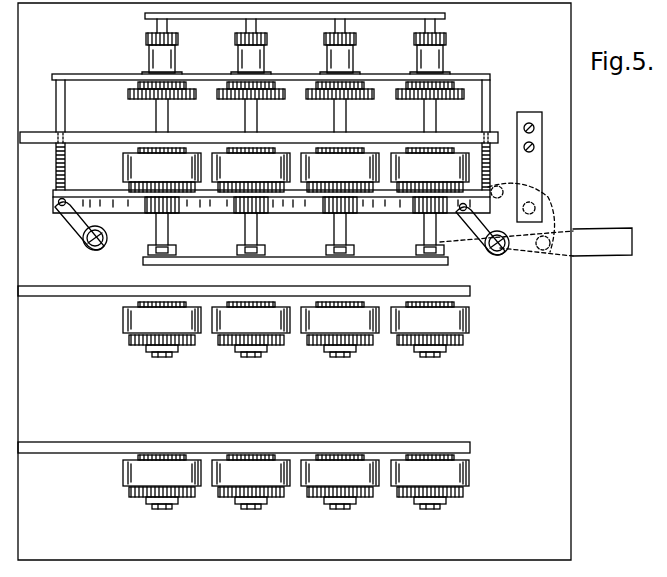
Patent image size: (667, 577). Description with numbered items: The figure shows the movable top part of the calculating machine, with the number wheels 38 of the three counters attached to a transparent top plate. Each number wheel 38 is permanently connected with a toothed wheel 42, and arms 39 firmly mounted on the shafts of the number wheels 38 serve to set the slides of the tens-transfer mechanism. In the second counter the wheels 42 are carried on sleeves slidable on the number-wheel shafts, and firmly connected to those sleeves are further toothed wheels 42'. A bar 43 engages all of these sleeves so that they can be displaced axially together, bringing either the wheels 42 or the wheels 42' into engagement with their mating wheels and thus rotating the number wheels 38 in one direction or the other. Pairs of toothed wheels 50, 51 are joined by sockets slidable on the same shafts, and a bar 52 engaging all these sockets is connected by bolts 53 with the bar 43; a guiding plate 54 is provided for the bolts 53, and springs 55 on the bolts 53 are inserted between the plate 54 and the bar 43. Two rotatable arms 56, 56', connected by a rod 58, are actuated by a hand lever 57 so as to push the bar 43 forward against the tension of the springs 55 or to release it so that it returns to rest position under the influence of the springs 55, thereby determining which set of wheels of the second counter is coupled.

The number wheels 38 is at (137, 157).
The arms 39 is at (232, 250).
The toothed wheels 42 is at (275, 350).
The toothed wheels 42' is at (296, 221).
The bar 43 is at (207, 198).
The toothed wheels 50 is at (128, 94).
The toothed wheels 51 is at (148, 39).
The bar 52 is at (78, 75).
The bolts 53 is at (58, 114).
The guiding plate 54 is at (202, 141).
The springs 55 is at (57, 155).
The rotatable arm 56 is at (80, 230).
The rotatable arm 56' is at (506, 233).
The hand lever 57 is at (607, 250).
The rod 58 is at (297, 209).